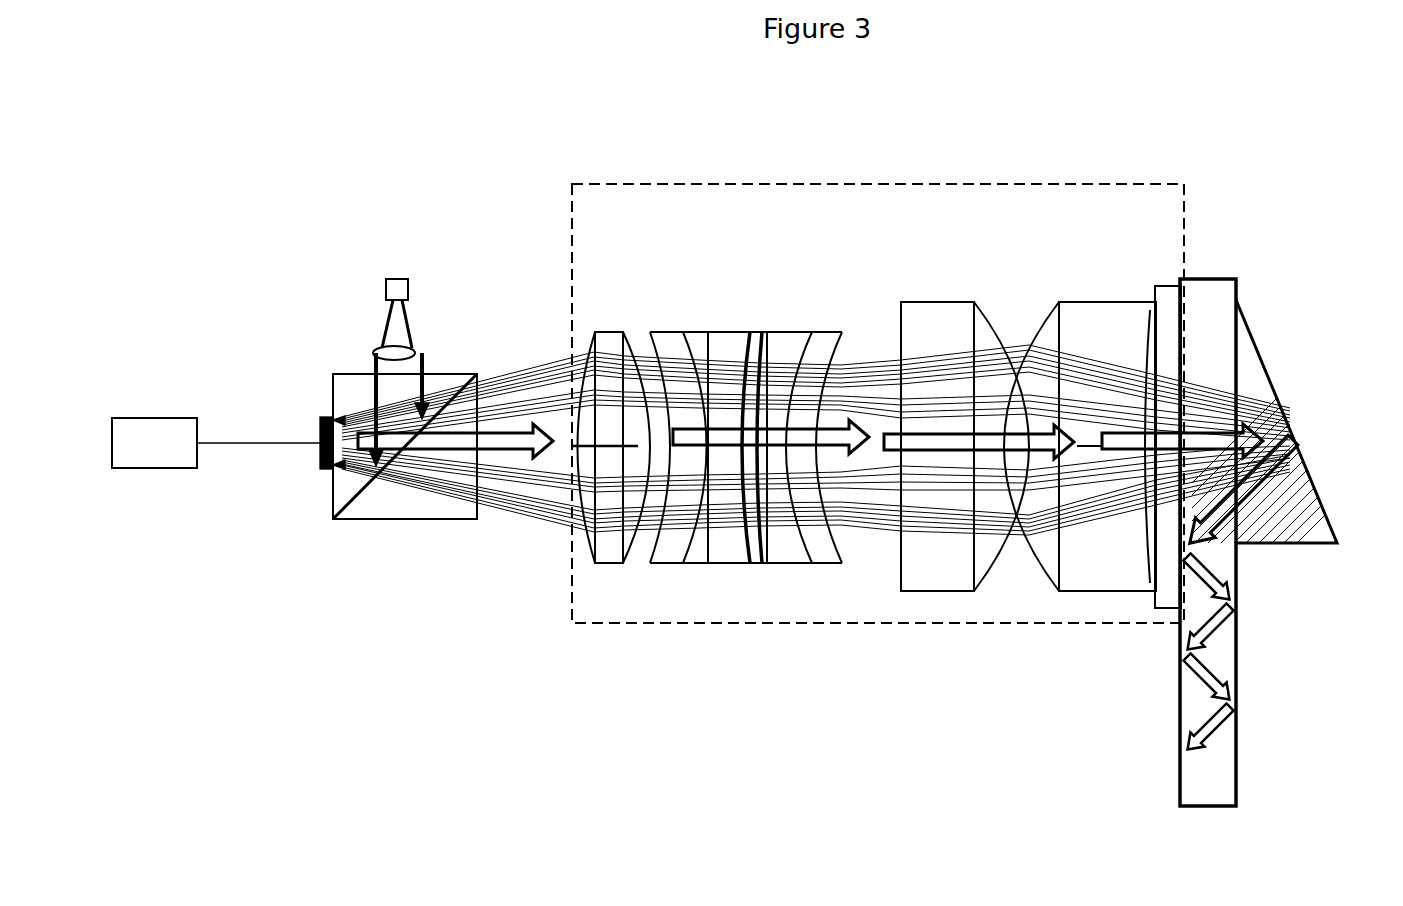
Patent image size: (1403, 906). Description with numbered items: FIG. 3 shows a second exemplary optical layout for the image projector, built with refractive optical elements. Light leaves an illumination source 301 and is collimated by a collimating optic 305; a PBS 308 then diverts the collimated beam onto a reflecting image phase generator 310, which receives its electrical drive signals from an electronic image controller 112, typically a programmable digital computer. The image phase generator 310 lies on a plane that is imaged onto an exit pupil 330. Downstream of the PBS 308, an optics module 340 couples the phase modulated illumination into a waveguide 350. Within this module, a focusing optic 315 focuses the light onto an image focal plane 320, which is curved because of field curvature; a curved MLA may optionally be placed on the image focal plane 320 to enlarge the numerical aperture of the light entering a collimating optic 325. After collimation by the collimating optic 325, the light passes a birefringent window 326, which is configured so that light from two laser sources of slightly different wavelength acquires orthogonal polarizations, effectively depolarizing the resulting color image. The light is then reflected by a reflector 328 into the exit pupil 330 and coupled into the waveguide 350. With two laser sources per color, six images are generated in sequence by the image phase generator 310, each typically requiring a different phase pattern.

The electronic image controller 112 is at (216, 443).
The illumination source 301 is at (417, 292).
The collimating optic 305 is at (428, 352).
The PBS 308 is at (400, 527).
The reflecting image phase generator 310 is at (318, 422).
The focusing optic 315 is at (601, 327).
The image focal plane 320 is at (753, 327).
The collimating optic 325 is at (966, 302).
The birefringent window 326 is at (1172, 278).
The reflector 328 is at (1262, 352).
The exit pupil 330 is at (1213, 545).
The optics module 340 is at (762, 184).
The waveguide 350 is at (1213, 279).